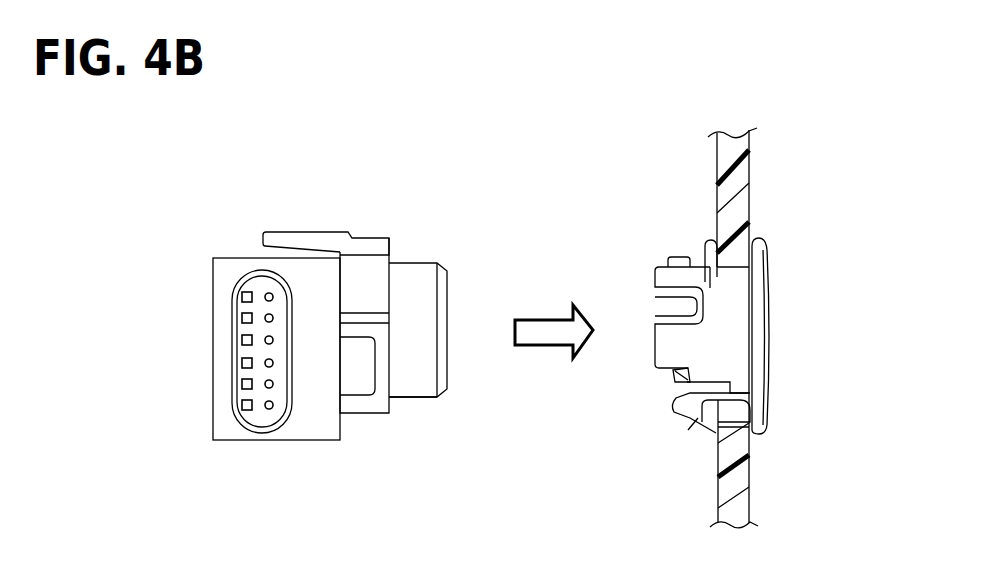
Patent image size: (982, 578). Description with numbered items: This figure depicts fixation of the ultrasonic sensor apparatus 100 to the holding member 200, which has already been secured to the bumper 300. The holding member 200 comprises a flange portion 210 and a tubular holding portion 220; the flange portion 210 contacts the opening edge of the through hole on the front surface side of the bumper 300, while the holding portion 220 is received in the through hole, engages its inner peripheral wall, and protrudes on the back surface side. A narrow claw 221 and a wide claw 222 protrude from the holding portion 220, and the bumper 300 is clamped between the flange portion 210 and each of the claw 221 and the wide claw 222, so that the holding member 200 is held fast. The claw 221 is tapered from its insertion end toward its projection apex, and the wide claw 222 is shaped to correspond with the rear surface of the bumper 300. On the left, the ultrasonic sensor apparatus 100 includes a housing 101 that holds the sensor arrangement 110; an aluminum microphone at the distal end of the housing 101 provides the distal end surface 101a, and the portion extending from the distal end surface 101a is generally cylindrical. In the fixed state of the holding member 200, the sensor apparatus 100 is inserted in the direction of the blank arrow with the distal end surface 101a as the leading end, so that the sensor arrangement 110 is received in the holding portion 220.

The ultrasonic sensor apparatus 100 is at (364, 321).
The housing 101 is at (227, 270).
The distal end surface 101a is at (452, 308).
The sensor arrangement 110 is at (418, 409).
The holding member 200 is at (730, 343).
The flange portion 210 is at (762, 252).
The holding portion 220 is at (646, 373).
The claw 221 is at (702, 420).
The wide claw 222 is at (709, 240).
The bumper 300 is at (740, 176).